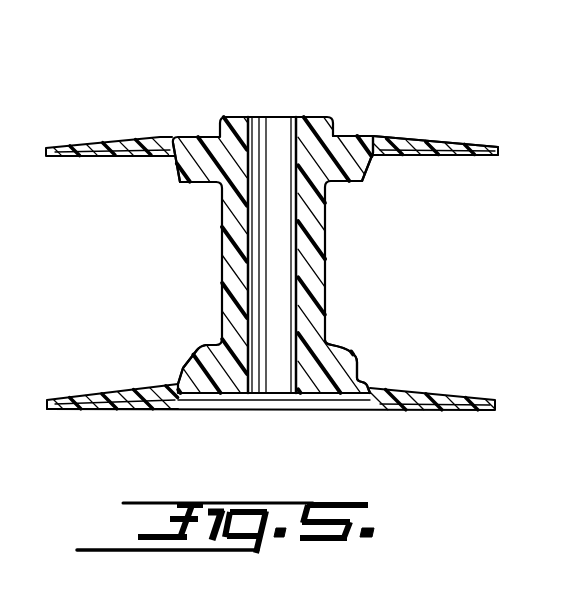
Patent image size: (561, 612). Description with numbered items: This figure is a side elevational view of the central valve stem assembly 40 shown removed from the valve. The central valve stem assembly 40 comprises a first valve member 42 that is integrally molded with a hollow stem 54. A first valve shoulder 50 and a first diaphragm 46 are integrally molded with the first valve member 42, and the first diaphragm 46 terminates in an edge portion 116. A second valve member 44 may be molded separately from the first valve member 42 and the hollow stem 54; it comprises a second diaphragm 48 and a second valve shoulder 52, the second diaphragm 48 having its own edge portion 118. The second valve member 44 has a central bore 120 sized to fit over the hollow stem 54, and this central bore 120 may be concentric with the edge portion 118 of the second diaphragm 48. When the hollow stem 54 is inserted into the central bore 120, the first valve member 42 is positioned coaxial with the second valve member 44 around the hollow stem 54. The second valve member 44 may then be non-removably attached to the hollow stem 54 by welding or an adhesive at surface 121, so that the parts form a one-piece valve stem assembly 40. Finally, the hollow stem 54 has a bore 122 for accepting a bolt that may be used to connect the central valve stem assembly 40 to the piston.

The central valve stem assembly 40 is at (203, 281).
The first valve member 42 is at (215, 377).
The second valve member 44 is at (187, 136).
The first diaphragm 46 is at (170, 408).
The second diaphragm 48 is at (428, 146).
The first valve shoulder 50 is at (357, 354).
The second valve shoulder 52 is at (363, 170).
The hollow stem 54 is at (310, 268).
The edge portion 116 is at (495, 403).
The edge portion 118 is at (502, 153).
The central bore 120 is at (243, 116).
The surface 121 is at (257, 116).
The bore 122 is at (292, 200).